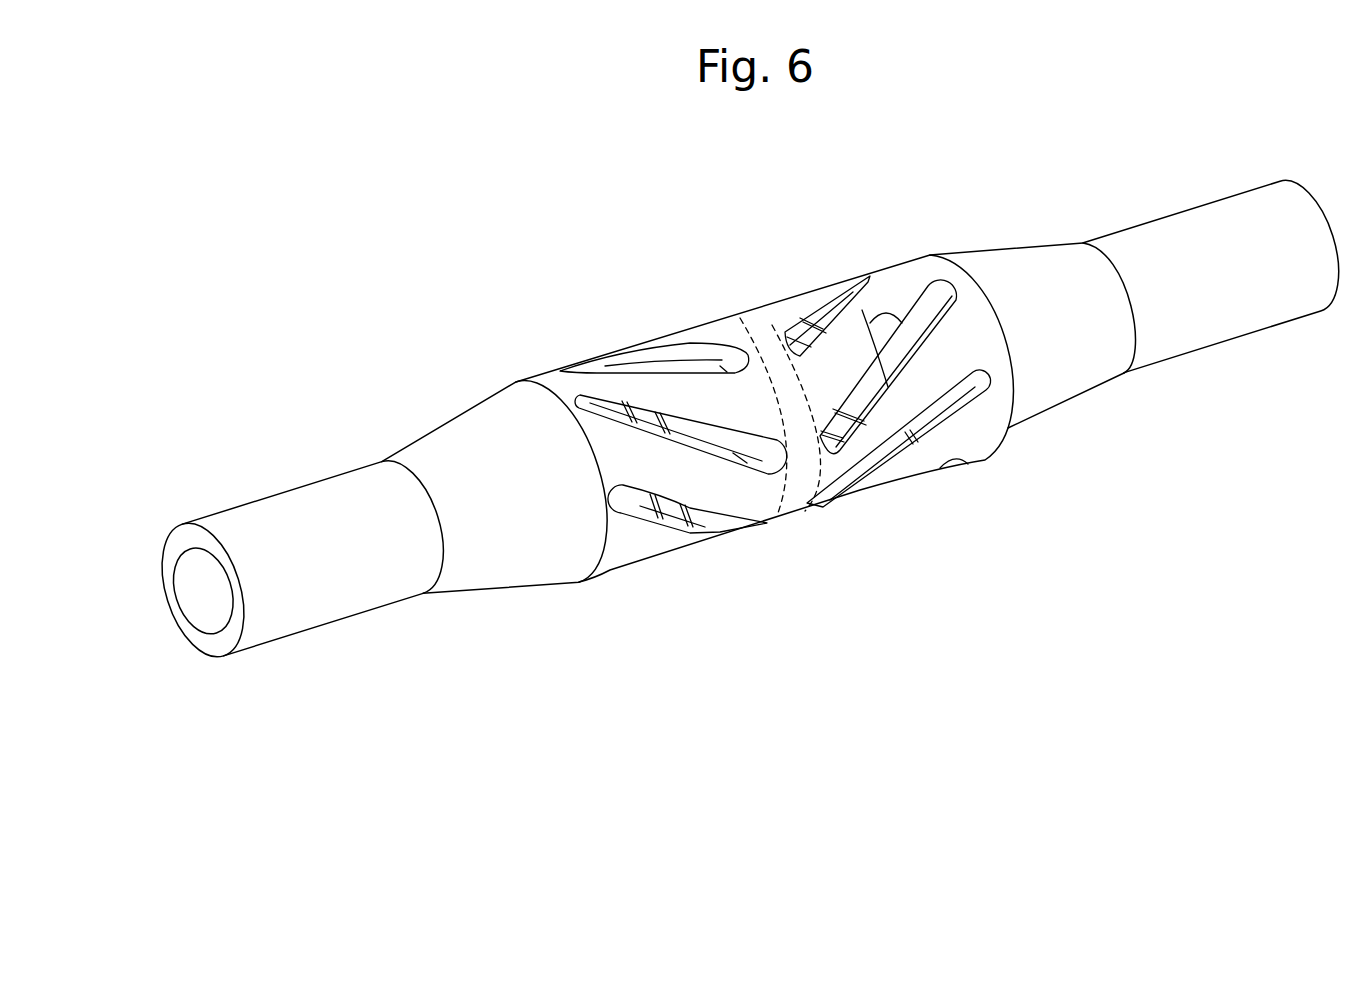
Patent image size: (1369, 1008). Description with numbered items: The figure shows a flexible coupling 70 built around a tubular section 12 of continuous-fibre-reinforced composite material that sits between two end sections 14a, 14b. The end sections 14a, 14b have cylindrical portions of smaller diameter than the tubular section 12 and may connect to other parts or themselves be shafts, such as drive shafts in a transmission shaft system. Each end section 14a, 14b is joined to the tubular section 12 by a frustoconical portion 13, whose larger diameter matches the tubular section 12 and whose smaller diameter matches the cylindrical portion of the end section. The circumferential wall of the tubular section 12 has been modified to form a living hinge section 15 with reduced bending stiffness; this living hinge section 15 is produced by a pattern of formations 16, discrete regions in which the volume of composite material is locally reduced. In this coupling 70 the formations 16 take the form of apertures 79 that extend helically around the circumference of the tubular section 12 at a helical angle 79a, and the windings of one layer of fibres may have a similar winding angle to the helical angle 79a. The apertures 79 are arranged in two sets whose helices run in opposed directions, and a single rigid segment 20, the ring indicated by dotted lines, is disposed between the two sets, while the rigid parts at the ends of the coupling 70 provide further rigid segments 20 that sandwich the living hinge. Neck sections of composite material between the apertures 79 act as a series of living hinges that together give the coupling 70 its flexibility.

The flexible coupling 70 is at (1223, 160).
The tubular section 12 is at (565, 297).
The frustoconical portion 13 is at (510, 563).
The end section 14a is at (622, 654).
The end section 14b is at (1368, 388).
The living hinge section 15 is at (1017, 532).
The formations 16 is at (683, 550).
The rigid segment 20 is at (743, 325).
The apertures 79 is at (832, 303).
The helical angle 79a is at (887, 307).